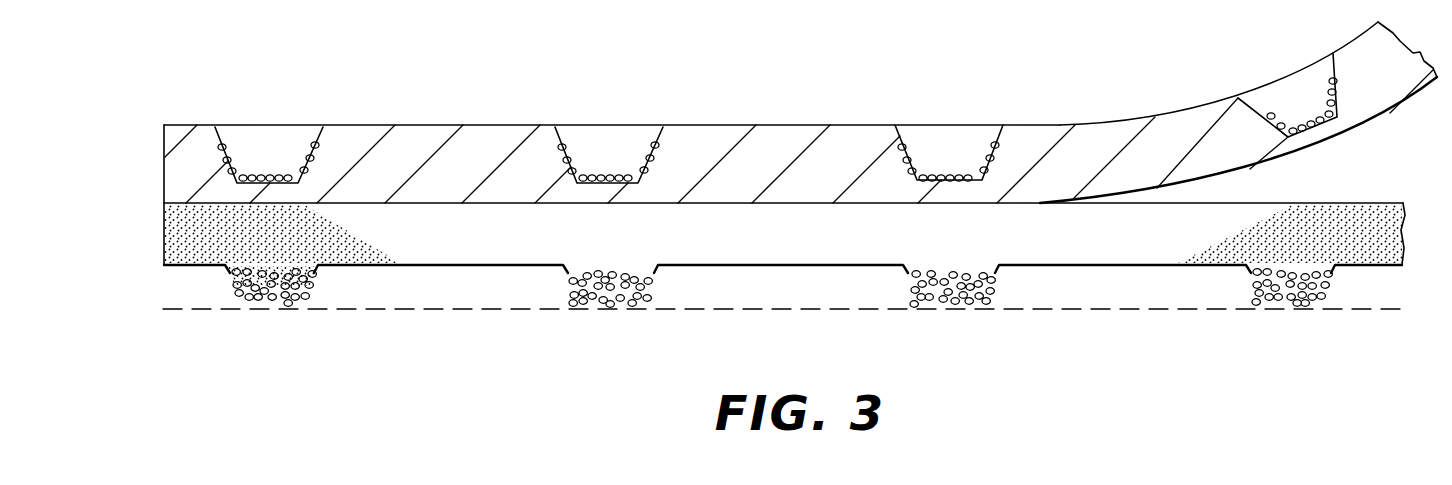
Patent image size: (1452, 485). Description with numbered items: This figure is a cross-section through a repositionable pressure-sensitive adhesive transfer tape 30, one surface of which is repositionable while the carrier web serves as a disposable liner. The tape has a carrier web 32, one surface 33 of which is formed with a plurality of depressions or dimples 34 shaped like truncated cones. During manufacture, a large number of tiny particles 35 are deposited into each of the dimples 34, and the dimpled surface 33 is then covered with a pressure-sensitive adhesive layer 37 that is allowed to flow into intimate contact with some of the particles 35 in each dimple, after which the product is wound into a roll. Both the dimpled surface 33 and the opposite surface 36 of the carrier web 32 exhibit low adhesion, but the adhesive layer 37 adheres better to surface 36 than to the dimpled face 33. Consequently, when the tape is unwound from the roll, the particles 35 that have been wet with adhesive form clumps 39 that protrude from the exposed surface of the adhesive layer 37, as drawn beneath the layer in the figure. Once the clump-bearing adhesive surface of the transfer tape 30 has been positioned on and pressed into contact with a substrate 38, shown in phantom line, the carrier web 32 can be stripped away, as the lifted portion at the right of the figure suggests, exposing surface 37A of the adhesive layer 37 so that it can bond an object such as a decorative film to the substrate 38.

The repositionable pressure-sensitive adhesive transfer tape 30 is at (450, 118).
The carrier web 32 is at (172, 163).
The dimpled surface 33 is at (772, 124).
The depressions or dimples 34 is at (1001, 128).
The tiny particles 35 is at (950, 170).
The surface of carrier web 36 is at (1364, 126).
The pressure-sensitive adhesive layer 37 is at (172, 234).
The surface of the adhesive layer 37A is at (1356, 202).
The substrate 38 is at (172, 308).
The clumps 39 is at (260, 307).